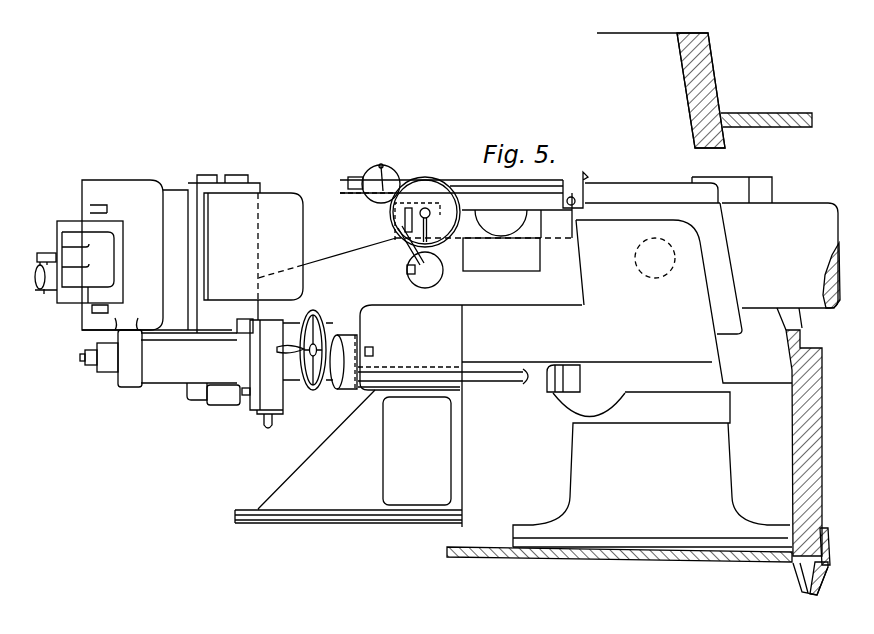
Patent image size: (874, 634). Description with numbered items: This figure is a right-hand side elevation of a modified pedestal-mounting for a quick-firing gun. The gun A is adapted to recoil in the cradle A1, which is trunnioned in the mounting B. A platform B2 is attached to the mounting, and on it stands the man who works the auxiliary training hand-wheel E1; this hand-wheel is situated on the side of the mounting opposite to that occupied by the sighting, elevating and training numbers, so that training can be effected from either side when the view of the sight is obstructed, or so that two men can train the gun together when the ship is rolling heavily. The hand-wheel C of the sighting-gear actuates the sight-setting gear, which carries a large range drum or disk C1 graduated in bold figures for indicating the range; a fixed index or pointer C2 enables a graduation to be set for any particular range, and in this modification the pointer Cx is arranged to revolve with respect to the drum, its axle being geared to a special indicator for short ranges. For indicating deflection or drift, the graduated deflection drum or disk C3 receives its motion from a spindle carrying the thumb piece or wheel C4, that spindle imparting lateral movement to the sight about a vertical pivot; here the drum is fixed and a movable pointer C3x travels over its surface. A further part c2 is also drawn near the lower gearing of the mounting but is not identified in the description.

The gun A is at (766, 255).
The cradle A1 is at (538, 262).
The mounting B is at (652, 383).
The platform B2 is at (473, 360).
The hand-wheel of the sighting-gear C is at (416, 277).
The range drum or disk C1 is at (430, 180).
The fixed index or pointer C2 is at (422, 222).
The graduated deflection drum or disk C3 is at (380, 179).
The movable pointer C3x is at (379, 166).
The thumb piece or wheel C4 is at (364, 190).
The movable pointer Cx is at (571, 180).
The auxiliary training hand-wheel E1 is at (311, 369).
The feed shaft c2 is at (512, 380).